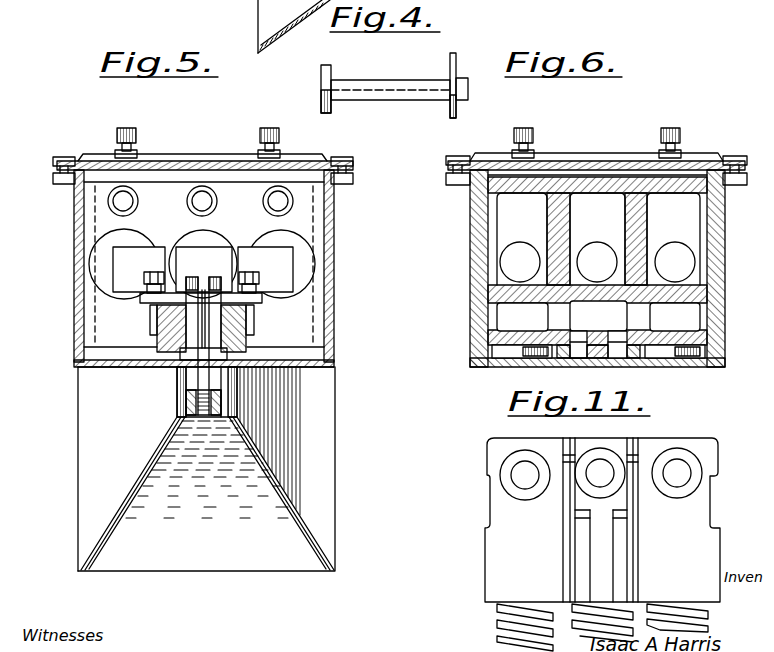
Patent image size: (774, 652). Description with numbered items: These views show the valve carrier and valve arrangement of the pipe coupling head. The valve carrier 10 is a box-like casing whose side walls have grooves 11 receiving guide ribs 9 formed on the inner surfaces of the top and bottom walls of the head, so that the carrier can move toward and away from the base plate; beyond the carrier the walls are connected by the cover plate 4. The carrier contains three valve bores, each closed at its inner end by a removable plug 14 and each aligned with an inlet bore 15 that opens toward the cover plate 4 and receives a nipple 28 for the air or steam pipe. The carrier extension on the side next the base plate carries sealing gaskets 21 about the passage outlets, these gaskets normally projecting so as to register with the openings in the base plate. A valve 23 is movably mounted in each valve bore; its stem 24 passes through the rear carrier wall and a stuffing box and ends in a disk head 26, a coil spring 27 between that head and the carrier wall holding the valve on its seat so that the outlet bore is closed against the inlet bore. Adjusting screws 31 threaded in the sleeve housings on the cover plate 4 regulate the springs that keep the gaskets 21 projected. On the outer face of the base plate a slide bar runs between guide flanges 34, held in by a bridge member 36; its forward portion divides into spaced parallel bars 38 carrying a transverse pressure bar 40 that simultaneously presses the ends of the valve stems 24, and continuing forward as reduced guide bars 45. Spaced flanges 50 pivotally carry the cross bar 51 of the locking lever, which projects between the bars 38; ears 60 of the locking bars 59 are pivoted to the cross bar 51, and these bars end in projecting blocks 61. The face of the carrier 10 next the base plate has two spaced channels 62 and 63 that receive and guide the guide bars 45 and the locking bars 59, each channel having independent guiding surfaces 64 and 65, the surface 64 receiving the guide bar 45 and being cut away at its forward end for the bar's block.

In FIG. 6, the cover plate 4 is at (615, 168).
In FIG. 5, the guide ribs 9 is at (84, 355).
In FIG. 6, the guide ribs 9 is at (485, 250).
In FIG. 5, the valve carrier 10 is at (88, 216).
In FIG. 6, the valve carrier 10 is at (580, 185).
In FIG. 6, the grooves 11 is at (480, 220).
In FIG. 11, the grooves 11 is at (487, 503).
In FIG. 6, the removable plugs 14 is at (597, 262).
In FIG. 6, the inlet bore 15 is at (660, 201).
In FIG. 5, the sealing gasket 21 is at (103, 368).
In FIG. 6, the sealing gasket 21 is at (513, 367).
In FIG. 11, the sealing gasket 21 is at (525, 497).
In FIG. 4, the valve 23 is at (321, 86).
In FIG. 4, the valve stem 24 is at (388, 85).
In FIG. 5, the disk head 26 is at (145, 243).
In FIG. 4, the disk head 26 is at (457, 73).
In FIG. 11, the coil spring 27 is at (497, 622).
In FIG. 5, the nipples 28 is at (138, 200).
In FIG. 5, the adjusting screws 31 is at (127, 130).
In FIG. 6, the adjusting screws 31 is at (523, 130).
In FIG. 5, the guide flanges 34 is at (160, 338).
In FIG. 5, the bridge member 36 is at (153, 298).
In FIG. 5, the spaced parallel bars 38 is at (146, 366).
In FIG. 5, the pressure bar 40 is at (248, 247).
In FIG. 6, the guide bars 45 is at (562, 358).
In FIG. 5, the spaced flanges 50 is at (194, 391).
In FIG. 5, the cross bar 51 is at (238, 323).
In FIG. 6, the locking bars 59 is at (594, 358).
In FIG. 5, the ears 60 is at (215, 277).
In FIG. 6, the blocks 61 is at (577, 358).
In FIG. 6, the channel 62 is at (675, 317).
In FIG. 6, the channel 63 is at (567, 341).
In FIG. 6, the guiding surface 64 is at (625, 333).
In FIG. 11, the guiding surface 64 is at (570, 570).
In FIG. 6, the guiding surface 65 is at (578, 333).
In FIG. 11, the guiding surface 65 is at (582, 544).